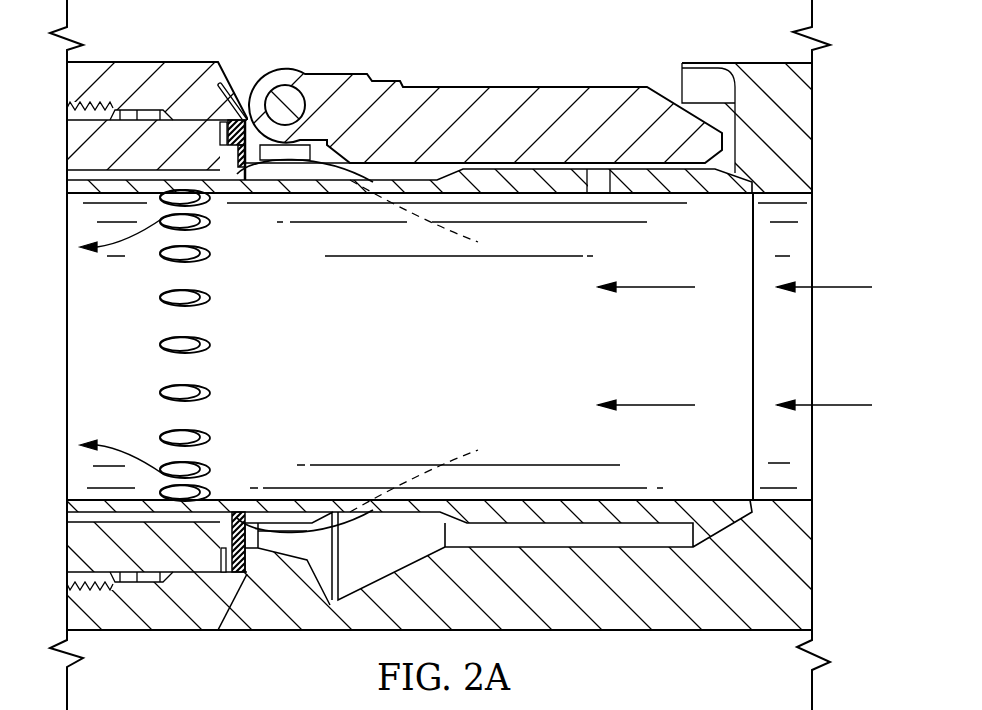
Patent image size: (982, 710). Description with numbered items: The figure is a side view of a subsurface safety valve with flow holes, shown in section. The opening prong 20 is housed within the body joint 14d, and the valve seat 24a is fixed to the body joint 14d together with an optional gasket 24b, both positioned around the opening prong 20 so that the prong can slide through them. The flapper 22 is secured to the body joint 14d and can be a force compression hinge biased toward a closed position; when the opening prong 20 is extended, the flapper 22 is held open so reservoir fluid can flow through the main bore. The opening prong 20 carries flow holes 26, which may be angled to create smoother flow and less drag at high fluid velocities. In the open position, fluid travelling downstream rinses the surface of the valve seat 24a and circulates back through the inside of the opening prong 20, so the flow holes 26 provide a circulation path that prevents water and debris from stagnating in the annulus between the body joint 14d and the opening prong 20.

The body joint 14d is at (670, 620).
The flapper 22 is at (515, 95).
The valve seat 24a is at (223, 537).
The gasket 24b is at (237, 572).
The flow holes 26 is at (200, 348).
The opening prong 20 is at (509, 360).